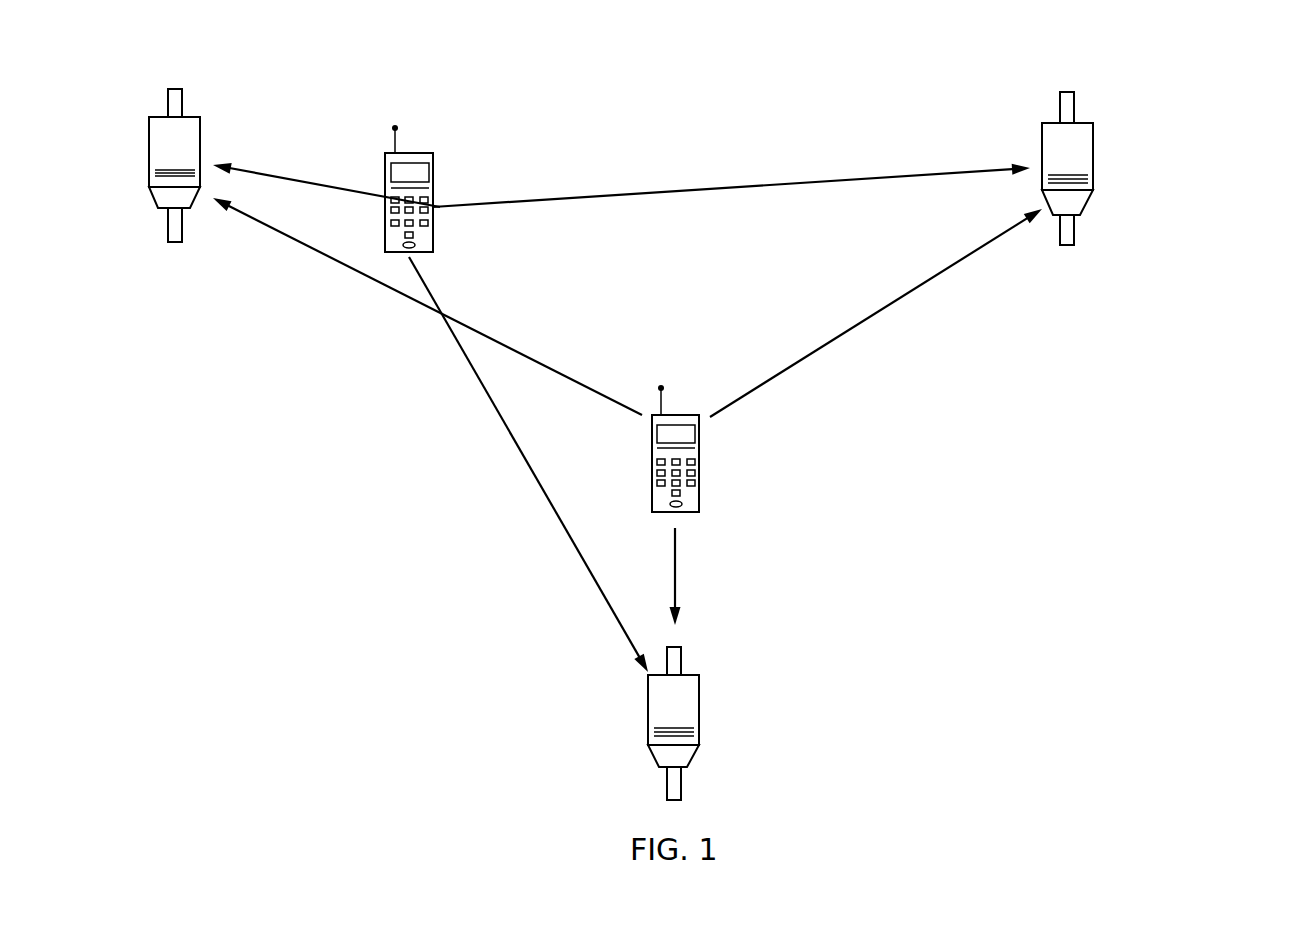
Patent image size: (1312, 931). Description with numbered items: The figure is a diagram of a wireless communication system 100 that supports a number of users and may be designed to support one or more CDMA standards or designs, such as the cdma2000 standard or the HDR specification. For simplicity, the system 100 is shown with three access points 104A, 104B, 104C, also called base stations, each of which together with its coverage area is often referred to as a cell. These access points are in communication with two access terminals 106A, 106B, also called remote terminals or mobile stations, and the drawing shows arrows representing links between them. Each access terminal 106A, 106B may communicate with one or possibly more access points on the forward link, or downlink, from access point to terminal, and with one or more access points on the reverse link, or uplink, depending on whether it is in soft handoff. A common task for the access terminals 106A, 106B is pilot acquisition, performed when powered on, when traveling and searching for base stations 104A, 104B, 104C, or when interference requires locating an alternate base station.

The wireless communication system 100 is at (1252, 69).
The access point 104A is at (187, 115).
The access point 104B is at (1082, 120).
The access point 104C is at (688, 673).
The access terminal 106A is at (410, 153).
The access terminal 106B is at (685, 512).